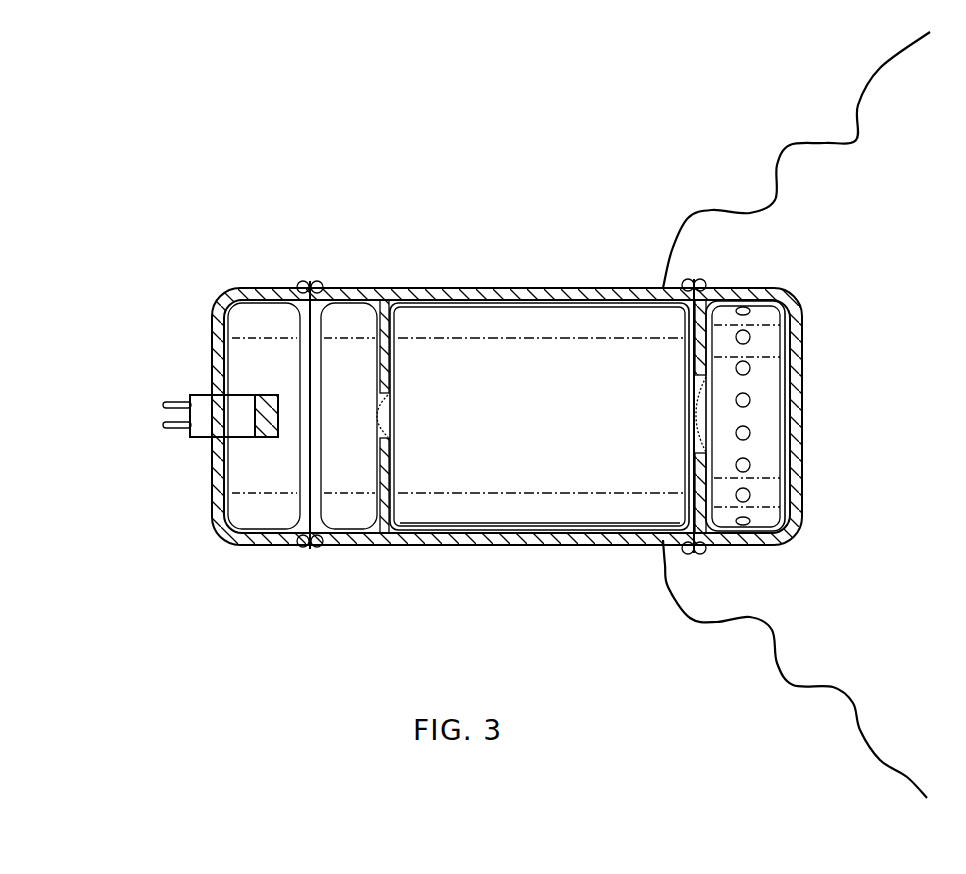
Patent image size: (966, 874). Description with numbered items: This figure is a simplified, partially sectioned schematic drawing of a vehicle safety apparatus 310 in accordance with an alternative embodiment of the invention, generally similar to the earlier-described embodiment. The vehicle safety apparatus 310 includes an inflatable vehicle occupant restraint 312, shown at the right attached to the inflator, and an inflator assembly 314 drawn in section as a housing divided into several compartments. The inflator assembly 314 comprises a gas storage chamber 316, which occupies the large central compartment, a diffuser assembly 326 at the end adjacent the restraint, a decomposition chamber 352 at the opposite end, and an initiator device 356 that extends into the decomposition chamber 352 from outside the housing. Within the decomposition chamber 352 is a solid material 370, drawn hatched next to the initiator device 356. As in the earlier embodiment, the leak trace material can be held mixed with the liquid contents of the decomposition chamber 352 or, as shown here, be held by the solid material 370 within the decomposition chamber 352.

The vehicle safety apparatus 310 is at (555, 210).
The inflatable vehicle occupant restraint 312 is at (815, 140).
The inflator assembly 314 is at (456, 335).
The gas storage chamber 316 is at (550, 513).
The diffuser assembly 326 is at (799, 279).
The decomposition chamber 352 is at (233, 497).
The initiator device 356 is at (198, 425).
The solid material 370 is at (265, 432).